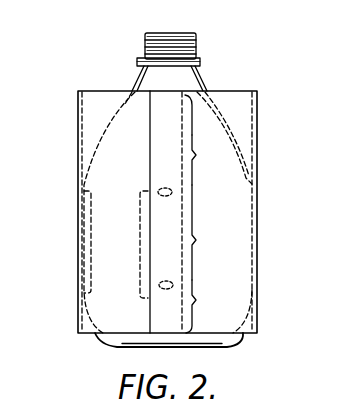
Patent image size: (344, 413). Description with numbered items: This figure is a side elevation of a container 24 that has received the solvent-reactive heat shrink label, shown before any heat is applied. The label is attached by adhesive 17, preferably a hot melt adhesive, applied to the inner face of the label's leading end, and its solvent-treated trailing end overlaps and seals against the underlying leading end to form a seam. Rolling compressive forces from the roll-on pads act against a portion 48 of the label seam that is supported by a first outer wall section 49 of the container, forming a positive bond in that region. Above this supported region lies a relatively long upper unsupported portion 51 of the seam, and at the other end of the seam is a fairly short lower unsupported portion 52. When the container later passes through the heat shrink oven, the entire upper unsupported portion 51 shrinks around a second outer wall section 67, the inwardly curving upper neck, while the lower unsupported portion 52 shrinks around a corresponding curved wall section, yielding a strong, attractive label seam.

The container 24 is at (220, 73).
The adhesive 17 is at (158, 188).
The first outer wall section 49 is at (92, 221).
The second outer wall section 67 is at (202, 124).
The upper unsupported portion 51 is at (206, 160).
The portion of the label seam 48 is at (208, 232).
The lower unsupported portion 52 is at (204, 306).